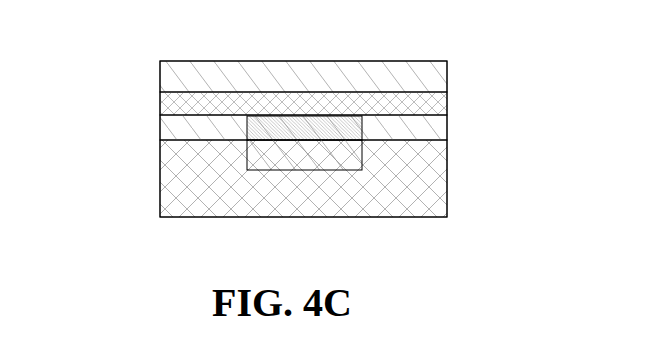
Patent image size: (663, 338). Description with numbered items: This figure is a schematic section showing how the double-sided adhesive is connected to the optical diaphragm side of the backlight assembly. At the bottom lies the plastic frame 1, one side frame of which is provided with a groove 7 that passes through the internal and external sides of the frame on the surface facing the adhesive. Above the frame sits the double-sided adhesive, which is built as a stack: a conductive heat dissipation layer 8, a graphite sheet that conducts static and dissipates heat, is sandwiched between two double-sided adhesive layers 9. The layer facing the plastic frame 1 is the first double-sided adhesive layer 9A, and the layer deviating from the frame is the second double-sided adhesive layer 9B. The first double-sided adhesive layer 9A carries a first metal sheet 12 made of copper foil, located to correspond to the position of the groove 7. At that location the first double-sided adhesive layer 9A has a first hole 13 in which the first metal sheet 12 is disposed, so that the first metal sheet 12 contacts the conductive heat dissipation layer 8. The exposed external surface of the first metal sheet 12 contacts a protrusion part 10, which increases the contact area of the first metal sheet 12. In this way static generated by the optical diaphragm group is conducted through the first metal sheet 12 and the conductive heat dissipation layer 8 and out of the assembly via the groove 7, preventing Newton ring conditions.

The plastic frame 1 is at (172, 183).
The groove 7 is at (283, 190).
The conductive heat dissipation layer 8 is at (447, 95).
The double-sided adhesive layer 9 is at (98, 67).
The first double-sided adhesive layer 9A is at (160, 128).
The second double-sided adhesive layer 9B is at (160, 77).
The protrusion part 10 is at (447, 162).
The first metal sheet 12 is at (300, 130).
The first hole 13 is at (447, 130).